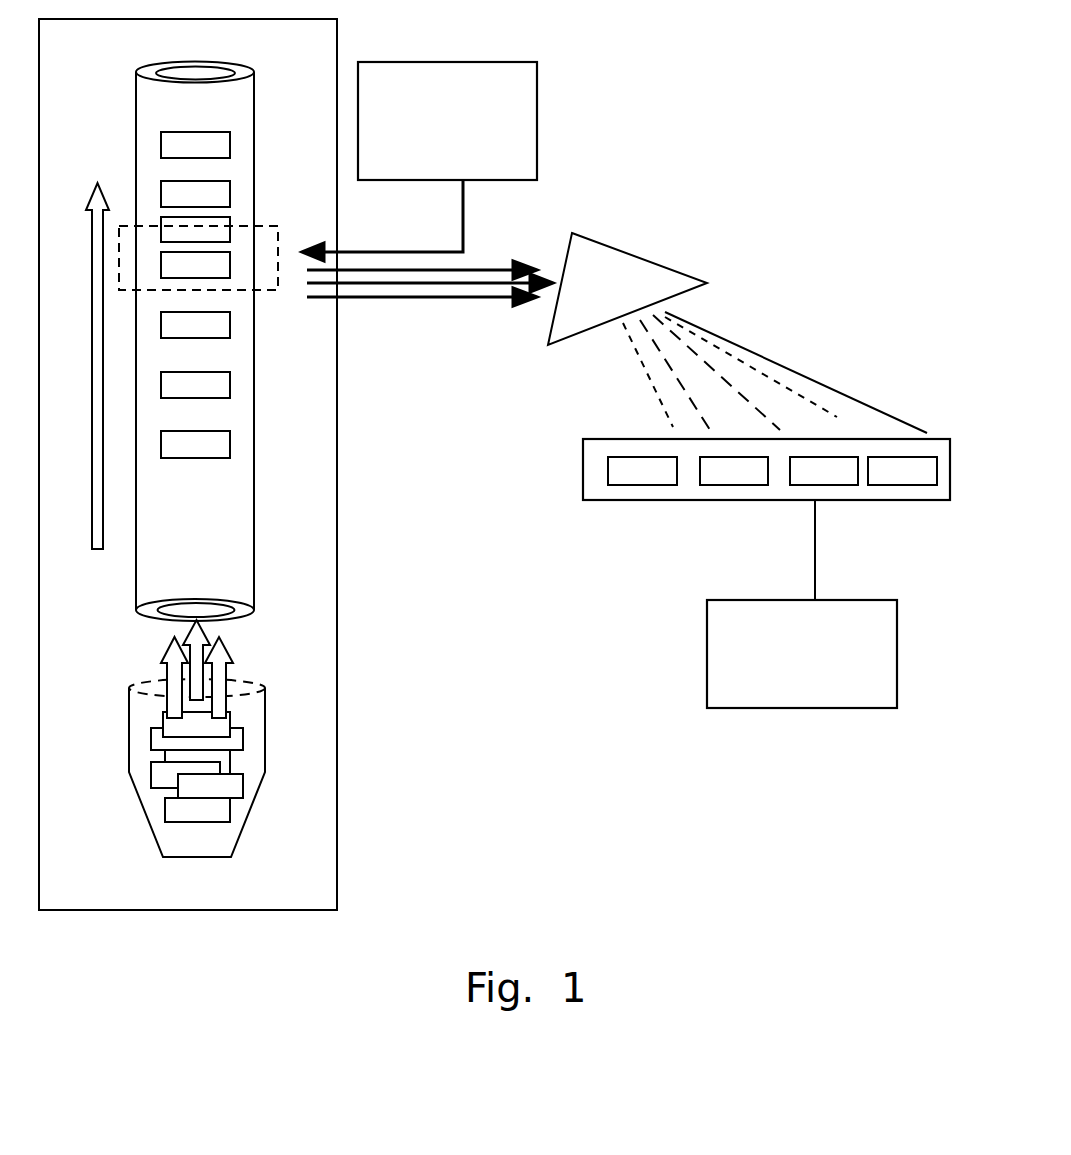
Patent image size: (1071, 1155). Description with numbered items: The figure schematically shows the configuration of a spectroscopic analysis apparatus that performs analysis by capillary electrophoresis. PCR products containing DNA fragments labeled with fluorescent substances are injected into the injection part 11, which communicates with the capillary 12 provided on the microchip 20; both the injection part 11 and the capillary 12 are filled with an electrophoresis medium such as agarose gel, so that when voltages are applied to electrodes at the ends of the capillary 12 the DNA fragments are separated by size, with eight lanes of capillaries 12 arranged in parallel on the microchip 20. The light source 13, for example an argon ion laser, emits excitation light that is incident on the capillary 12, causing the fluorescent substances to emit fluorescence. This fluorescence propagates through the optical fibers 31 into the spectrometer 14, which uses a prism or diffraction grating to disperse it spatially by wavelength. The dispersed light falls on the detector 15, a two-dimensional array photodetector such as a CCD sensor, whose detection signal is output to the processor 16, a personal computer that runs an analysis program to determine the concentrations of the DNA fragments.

The injection part 11 is at (265, 727).
The capillary 12 is at (253, 453).
The light source 13 is at (538, 103).
The spectrometer 14 is at (640, 253).
The detector 15 is at (642, 502).
The processor 16 is at (897, 653).
The microchip 20 is at (338, 607).
The optical fibers 31 is at (463, 298).